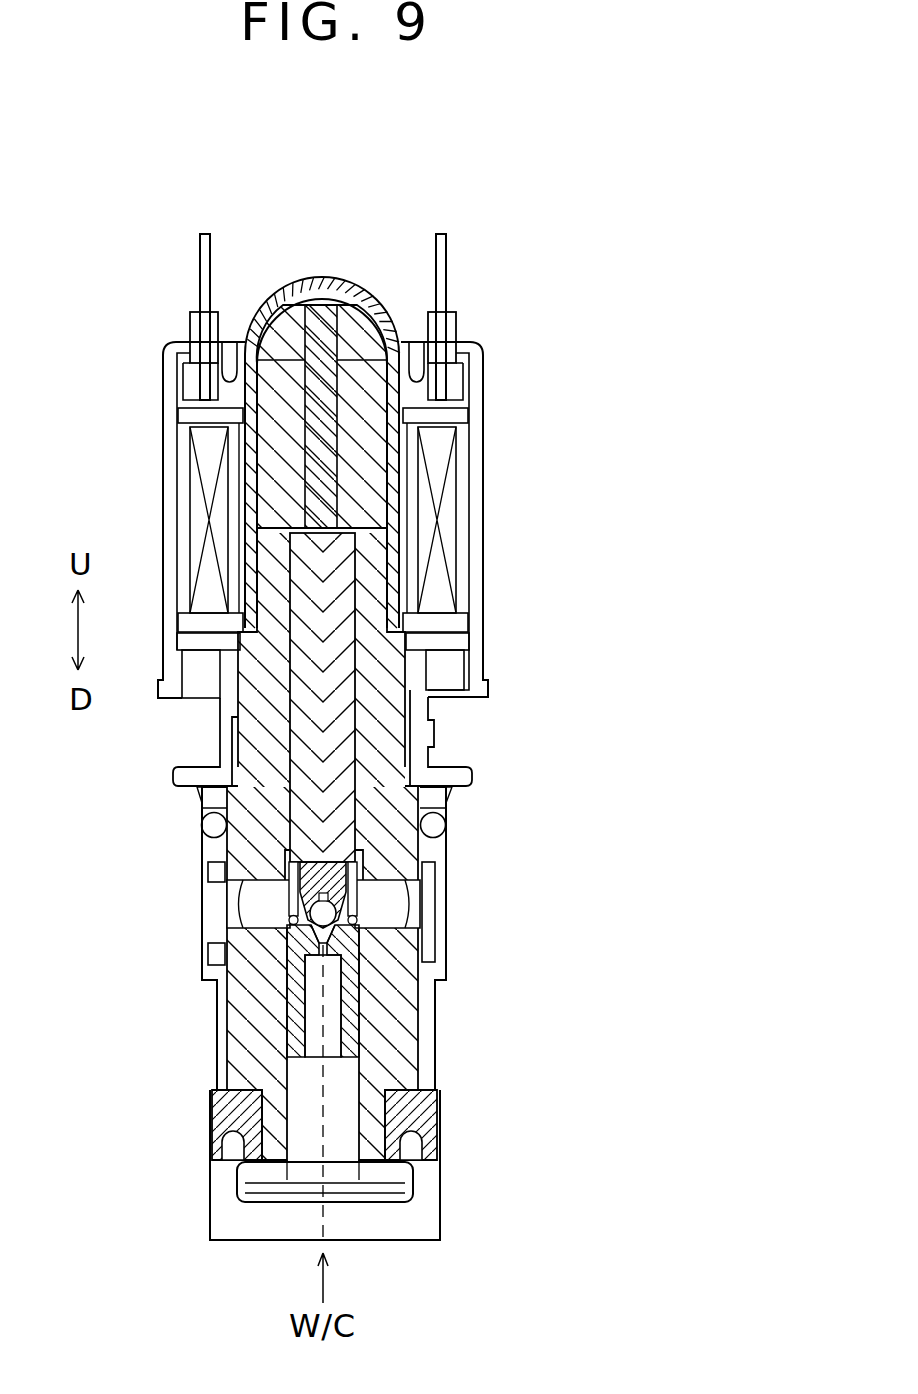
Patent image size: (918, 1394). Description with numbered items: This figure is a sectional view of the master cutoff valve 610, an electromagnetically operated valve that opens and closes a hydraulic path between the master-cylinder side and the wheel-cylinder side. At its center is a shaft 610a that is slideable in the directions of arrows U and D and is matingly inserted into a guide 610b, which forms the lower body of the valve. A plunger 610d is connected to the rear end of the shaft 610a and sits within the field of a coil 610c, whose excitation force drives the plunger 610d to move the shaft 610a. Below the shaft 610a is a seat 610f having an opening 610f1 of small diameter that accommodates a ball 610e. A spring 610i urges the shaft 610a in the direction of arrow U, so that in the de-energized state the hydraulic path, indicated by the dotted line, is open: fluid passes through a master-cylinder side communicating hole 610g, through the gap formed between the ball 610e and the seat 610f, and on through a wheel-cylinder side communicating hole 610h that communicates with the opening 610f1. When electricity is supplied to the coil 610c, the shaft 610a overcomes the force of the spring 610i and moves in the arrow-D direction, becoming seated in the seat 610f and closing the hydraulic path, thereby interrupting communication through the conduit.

The master cutoff valve 610 is at (499, 224).
The shaft 610a is at (317, 805).
The guide 610b is at (410, 1053).
The coil 610c is at (432, 601).
The plunger 610d is at (360, 440).
The ball 610e is at (310, 922).
The seat 610f is at (297, 1027).
The opening 610f1 is at (335, 932).
The master-cylinder side communicating hole 610g is at (413, 915).
The wheel-cylinder side communicating hole 610h is at (317, 990).
The spring 610i is at (292, 877).